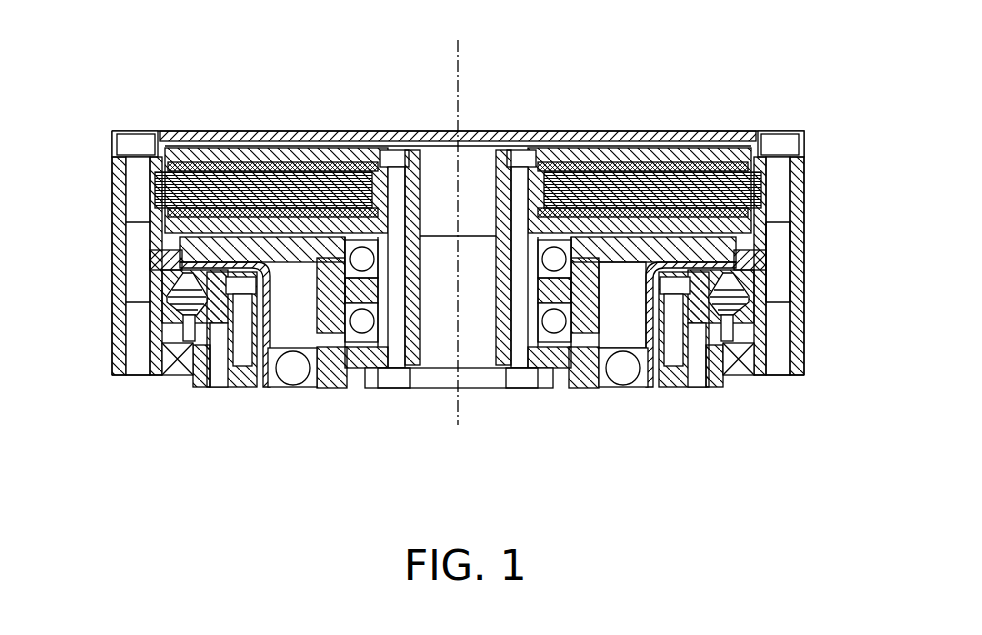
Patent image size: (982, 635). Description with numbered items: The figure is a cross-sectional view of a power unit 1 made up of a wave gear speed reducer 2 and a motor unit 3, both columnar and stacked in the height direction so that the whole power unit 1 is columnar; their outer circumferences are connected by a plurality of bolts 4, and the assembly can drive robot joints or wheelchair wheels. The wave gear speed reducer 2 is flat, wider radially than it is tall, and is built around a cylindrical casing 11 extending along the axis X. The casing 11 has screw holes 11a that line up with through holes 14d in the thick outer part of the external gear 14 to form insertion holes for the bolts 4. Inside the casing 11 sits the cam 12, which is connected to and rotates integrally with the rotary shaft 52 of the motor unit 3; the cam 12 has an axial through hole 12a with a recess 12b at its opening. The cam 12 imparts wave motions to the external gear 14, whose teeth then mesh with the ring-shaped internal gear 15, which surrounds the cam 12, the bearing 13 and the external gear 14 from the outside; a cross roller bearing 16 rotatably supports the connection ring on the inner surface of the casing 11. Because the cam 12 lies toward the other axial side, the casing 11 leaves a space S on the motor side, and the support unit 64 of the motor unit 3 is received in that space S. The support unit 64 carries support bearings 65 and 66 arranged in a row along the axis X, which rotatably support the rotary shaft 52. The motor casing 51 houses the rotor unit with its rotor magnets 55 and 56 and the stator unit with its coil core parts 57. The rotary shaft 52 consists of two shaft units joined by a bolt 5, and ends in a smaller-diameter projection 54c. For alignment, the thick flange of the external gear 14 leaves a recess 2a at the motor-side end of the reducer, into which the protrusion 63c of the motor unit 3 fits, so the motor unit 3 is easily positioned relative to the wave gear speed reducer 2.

The power unit 1 is at (816, 73).
The wave gear speed reducer 2 is at (812, 392).
The recess 2a is at (165, 252).
The motor unit 3 is at (126, 106).
The bolts 4 is at (787, 172).
The bolt 5 is at (396, 150).
The casing 11 is at (796, 328).
The screw holes 11a is at (790, 342).
The cam 12 is at (343, 388).
The through hole 12a is at (438, 388).
The recess 12b is at (386, 388).
The bearing 13 is at (290, 388).
The external gear 14 is at (716, 388).
The through holes 14d is at (788, 254).
The internal gear 15 is at (243, 388).
The cross roller bearing 16 is at (167, 376).
The motor casing 51 is at (631, 153).
The rotary shaft 52 is at (502, 150).
The projection 54c is at (503, 388).
The rotor magnet 55 is at (312, 153).
The rotor magnet 56 is at (573, 168).
The coil core parts 57 is at (712, 172).
The protrusion 63c is at (230, 247).
The support unit 64 is at (639, 345).
The support bearing 65 is at (592, 388).
The support bearing 66 is at (548, 388).
The space S is at (632, 283).
The axis X is at (456, 52).